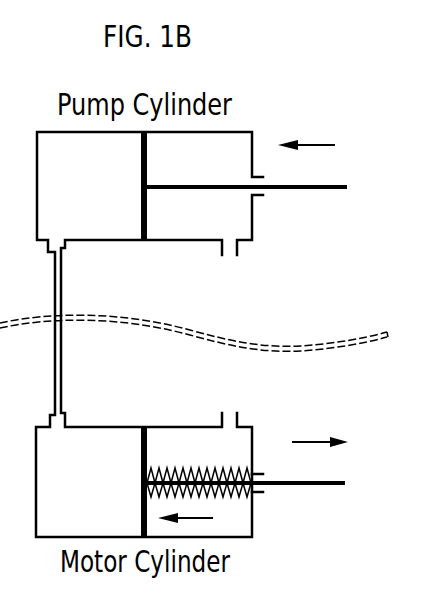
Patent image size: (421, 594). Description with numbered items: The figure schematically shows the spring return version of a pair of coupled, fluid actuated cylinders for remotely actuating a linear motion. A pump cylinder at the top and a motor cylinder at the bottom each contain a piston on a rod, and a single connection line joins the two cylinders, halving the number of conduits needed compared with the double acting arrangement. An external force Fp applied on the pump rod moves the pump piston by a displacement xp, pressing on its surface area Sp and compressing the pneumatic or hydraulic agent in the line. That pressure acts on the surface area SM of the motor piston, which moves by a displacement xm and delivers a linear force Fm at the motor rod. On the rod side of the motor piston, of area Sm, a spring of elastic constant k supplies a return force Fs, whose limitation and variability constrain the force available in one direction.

The pump piston surface area Sp is at (143, 186).
The pump piston displacement xp is at (247, 167).
The pump rod force Fp is at (306, 124).
The motor piston surface area (large side) SM is at (126, 482).
The motor piston surface area (rod side) Sm is at (162, 482).
The motor piston displacement xm is at (246, 463).
The motor rod force Fm is at (320, 422).
The spring force Fs is at (199, 499).